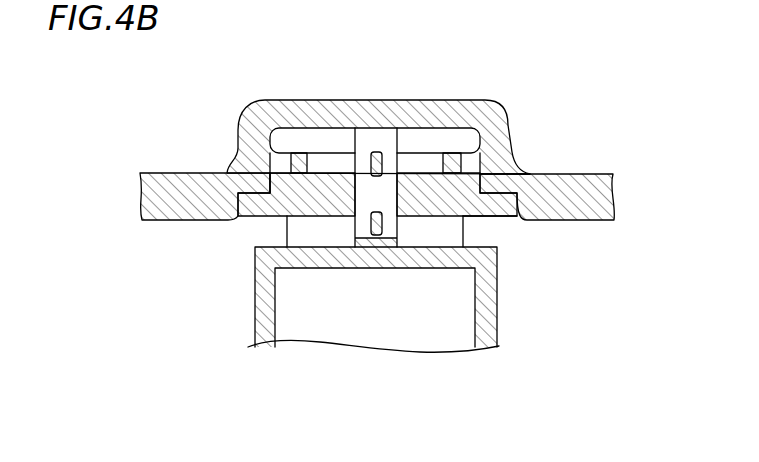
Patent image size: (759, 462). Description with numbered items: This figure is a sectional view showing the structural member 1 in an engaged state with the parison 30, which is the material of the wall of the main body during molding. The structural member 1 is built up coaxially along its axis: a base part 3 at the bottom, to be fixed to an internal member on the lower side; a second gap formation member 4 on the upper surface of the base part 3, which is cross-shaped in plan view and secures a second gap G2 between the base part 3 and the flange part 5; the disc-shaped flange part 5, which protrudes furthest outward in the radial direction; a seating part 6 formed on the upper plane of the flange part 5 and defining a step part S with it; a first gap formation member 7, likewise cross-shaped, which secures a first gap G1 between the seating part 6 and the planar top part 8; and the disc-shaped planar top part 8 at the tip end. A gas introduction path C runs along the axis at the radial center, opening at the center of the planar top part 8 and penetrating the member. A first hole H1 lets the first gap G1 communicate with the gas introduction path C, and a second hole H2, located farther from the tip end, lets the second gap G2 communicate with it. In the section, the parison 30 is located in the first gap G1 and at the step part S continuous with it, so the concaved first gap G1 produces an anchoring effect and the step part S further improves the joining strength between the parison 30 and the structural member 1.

The structural member 1 is at (391, 234).
The base part 3 is at (505, 290).
The second gap formation member 4 is at (287, 226).
The flange part 5 is at (575, 173).
The seating part 6 is at (228, 173).
The first gap formation member 7 is at (462, 172).
The planar top part 8 is at (316, 166).
The parison 30 is at (460, 100).
The gas introduction path C is at (387, 137).
The first hole H1 is at (372, 150).
The second hole H2 is at (378, 232).
The first gap G1 is at (268, 192).
The second gap G2 is at (475, 228).
The step part S is at (508, 168).